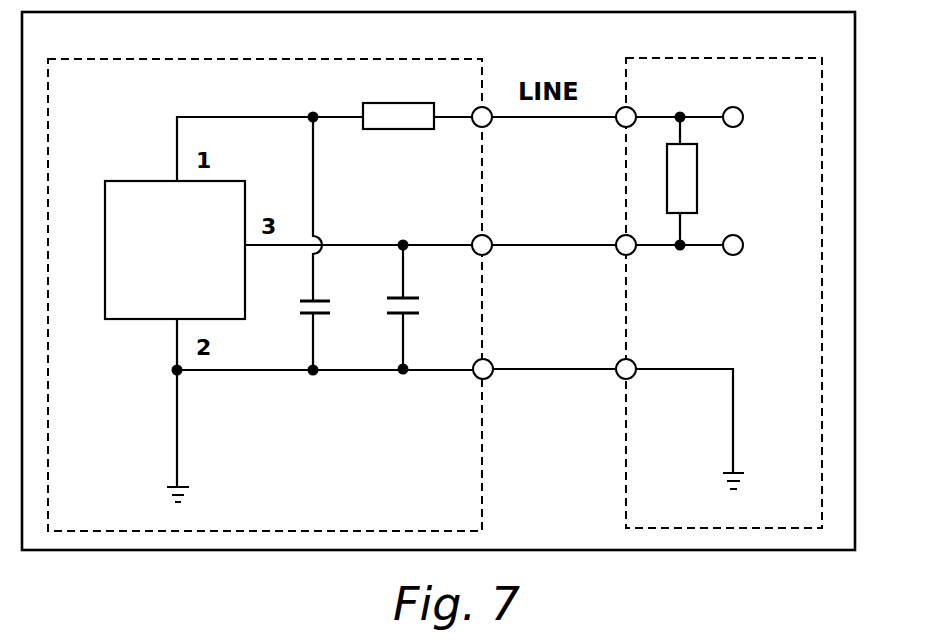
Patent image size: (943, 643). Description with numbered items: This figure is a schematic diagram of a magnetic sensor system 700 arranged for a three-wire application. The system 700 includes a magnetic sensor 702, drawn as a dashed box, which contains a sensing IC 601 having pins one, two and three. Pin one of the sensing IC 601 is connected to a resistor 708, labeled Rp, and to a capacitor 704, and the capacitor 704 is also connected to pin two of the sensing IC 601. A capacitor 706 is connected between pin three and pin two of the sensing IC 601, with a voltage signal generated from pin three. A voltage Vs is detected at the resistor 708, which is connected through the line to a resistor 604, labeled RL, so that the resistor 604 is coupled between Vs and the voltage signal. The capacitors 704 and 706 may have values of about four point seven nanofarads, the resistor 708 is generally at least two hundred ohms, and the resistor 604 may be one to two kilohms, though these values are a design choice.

The magnetic sensor system 700 is at (438, 281).
The magnetic sensor 702 is at (265, 295).
The sensing IC 601 is at (150, 181).
The resistor 708 is at (403, 129).
The capacitor 704 is at (305, 315).
The capacitor 706 is at (411, 315).
The resistor 604 is at (700, 192).